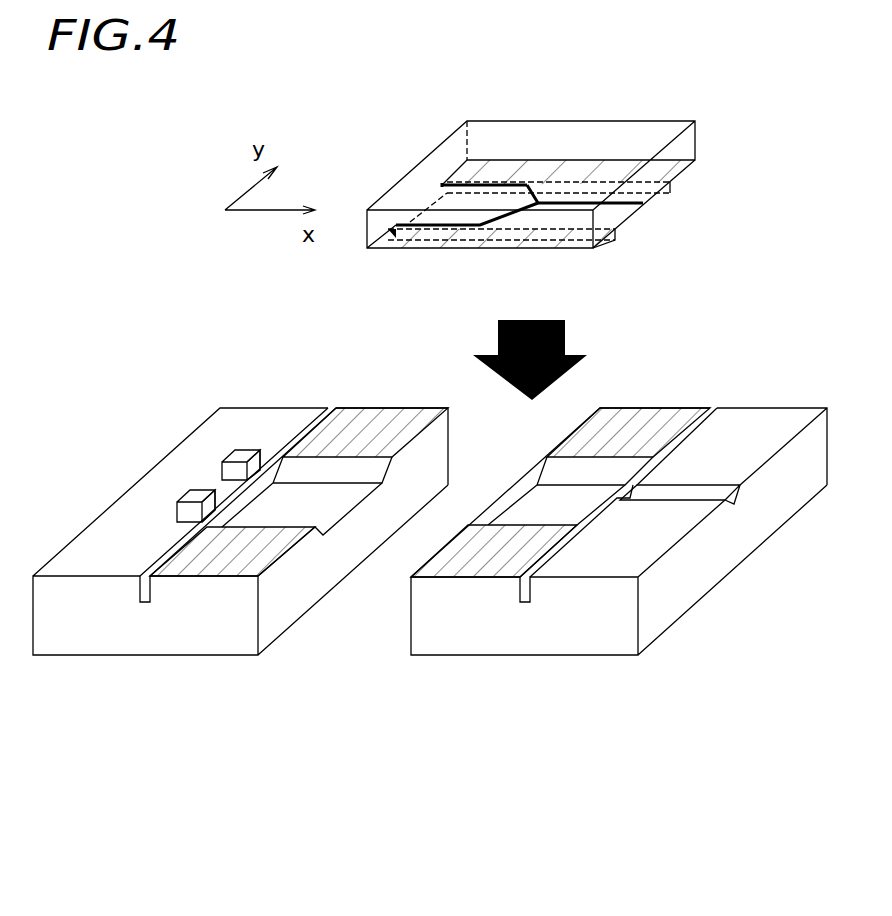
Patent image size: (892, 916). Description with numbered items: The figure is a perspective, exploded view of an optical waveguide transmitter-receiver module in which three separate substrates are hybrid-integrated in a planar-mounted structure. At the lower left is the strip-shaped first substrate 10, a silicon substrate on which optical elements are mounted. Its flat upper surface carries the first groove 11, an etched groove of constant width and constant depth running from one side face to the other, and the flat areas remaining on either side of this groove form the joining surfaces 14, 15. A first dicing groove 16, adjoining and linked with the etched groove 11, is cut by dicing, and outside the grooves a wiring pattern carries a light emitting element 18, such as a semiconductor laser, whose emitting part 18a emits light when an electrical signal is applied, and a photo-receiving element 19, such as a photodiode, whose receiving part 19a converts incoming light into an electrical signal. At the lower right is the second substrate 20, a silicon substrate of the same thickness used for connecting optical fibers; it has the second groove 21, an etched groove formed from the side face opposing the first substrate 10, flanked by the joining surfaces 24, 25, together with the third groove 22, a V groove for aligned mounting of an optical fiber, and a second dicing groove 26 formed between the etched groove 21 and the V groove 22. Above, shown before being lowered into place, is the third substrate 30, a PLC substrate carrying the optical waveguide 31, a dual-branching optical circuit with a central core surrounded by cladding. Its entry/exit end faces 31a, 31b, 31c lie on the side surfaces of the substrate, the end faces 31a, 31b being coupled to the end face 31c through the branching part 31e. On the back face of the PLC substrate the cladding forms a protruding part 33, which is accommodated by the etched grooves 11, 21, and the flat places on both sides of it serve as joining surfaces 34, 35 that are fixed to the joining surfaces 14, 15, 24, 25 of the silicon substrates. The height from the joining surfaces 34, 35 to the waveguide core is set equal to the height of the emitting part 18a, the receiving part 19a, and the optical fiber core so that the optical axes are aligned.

The first substrate 10 is at (238, 534).
The first groove 11 is at (323, 517).
The joining surface 14 is at (200, 568).
The joining surface 15 is at (372, 418).
The first dicing groove 16 is at (142, 603).
The light emitting element 18 is at (121, 471).
The emitting part 18a is at (210, 503).
The photo-receiving element 19 is at (189, 410).
The receiving part 19a is at (266, 455).
The second substrate 20 is at (619, 534).
The second groove 21 is at (543, 507).
The third groove 22 is at (733, 495).
The joining surface 24 is at (445, 570).
The joining surface 25 is at (650, 410).
The second dicing groove 26 is at (525, 603).
The third substrate 30 is at (550, 169).
The optical waveguide 31 is at (550, 137).
The entry/exit end face 31a is at (398, 224).
The entry/exit end face 31b is at (442, 183).
The entry/exit end face 31c is at (645, 204).
The branching part 31e is at (538, 201).
The protruding part 33 is at (645, 218).
The joining surface 34 is at (598, 246).
The joining surface 35 is at (693, 172).